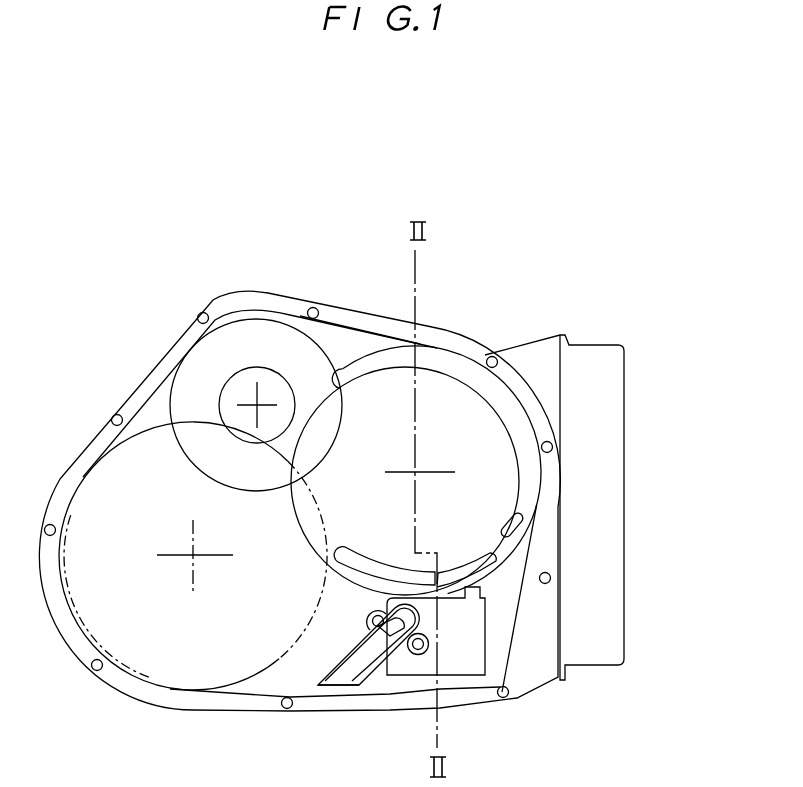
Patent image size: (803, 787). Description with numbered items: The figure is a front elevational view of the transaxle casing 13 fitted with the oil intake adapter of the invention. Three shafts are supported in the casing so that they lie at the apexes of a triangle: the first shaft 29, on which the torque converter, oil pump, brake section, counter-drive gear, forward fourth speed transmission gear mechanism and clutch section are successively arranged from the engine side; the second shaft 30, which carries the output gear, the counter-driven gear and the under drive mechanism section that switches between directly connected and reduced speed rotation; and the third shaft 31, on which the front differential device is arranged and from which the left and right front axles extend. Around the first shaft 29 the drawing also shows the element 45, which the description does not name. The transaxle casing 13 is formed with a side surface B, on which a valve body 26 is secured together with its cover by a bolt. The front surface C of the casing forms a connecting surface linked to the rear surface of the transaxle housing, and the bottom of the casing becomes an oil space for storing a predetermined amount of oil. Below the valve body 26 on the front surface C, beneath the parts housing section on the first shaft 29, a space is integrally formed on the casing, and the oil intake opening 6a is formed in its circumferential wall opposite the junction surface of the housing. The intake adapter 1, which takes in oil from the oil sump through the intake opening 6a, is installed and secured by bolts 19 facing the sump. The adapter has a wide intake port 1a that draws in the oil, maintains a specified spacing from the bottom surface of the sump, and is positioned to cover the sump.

The intake adapter 1 is at (378, 682).
The intake port 1a is at (338, 686).
The oil intake opening 6a is at (375, 636).
The transaxle casing 13 is at (313, 300).
The bolts 19 is at (375, 621).
The valve body 26 is at (607, 414).
The first shaft 29 is at (415, 470).
The second shaft 30 is at (255, 400).
The third shaft 31 is at (193, 555).
The eccentric adjusting ring 45 is at (502, 395).
The side surface B is at (563, 390).
The front surface C is at (376, 327).